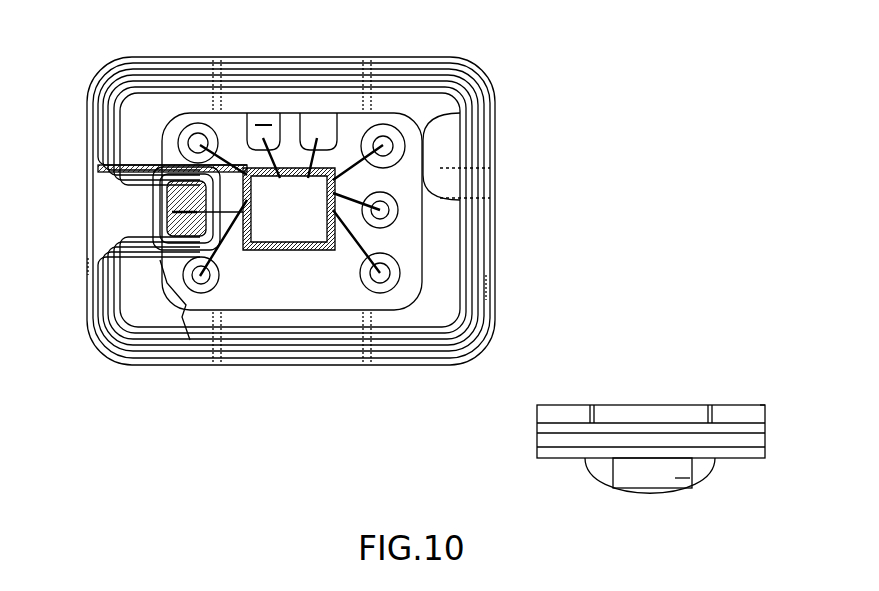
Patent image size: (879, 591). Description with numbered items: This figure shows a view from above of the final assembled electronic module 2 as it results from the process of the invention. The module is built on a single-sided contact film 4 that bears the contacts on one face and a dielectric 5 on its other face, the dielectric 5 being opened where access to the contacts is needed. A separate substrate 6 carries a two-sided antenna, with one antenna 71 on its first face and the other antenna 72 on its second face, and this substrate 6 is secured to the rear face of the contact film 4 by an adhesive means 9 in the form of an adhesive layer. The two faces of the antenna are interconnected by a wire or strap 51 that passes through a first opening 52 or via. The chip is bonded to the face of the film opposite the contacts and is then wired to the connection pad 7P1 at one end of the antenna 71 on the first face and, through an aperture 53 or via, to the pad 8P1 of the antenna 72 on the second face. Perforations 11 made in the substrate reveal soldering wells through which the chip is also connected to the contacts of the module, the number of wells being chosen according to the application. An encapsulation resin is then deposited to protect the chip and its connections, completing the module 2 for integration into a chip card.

The electronic module 2 is at (503, 242).
The single-sided film 4 is at (537, 425).
The dielectric 5 is at (190, 340).
The substrate 6 is at (550, 458).
The adhesive means 9 is at (763, 442).
The perforations 11 is at (460, 114).
The strap 51 is at (165, 222).
The first opening 52 is at (165, 210).
The aperture 53 is at (270, 132).
The antenna 71 is at (490, 292).
The antenna 72 is at (82, 267).
The pad 8P1 is at (260, 113).
The connection pad 7P1 is at (317, 113).